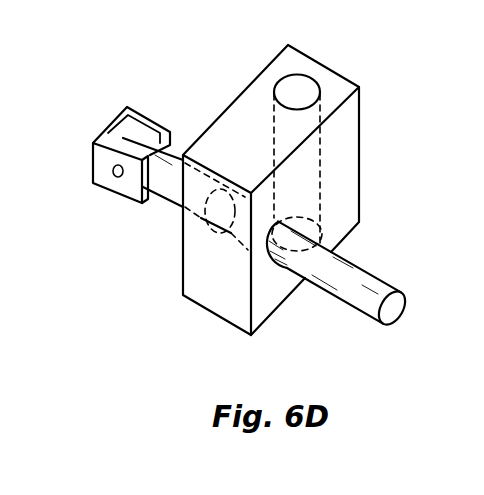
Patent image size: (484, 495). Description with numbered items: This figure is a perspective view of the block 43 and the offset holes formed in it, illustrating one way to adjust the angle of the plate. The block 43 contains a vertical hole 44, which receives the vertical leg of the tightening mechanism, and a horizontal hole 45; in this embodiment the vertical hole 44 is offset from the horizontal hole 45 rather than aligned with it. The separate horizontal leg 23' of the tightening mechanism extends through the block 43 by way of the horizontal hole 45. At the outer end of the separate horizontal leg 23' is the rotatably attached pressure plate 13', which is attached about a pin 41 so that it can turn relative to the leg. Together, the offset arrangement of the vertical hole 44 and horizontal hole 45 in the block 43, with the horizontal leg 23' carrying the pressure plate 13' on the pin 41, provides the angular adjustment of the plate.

The block 43 is at (235, 137).
The vertical hole 44 is at (297, 92).
The horizontal hole 45 is at (288, 266).
The separate horizontal leg 23' is at (344, 292).
The rotatably attached pressure plate 13' is at (144, 167).
The pin 41 is at (120, 177).